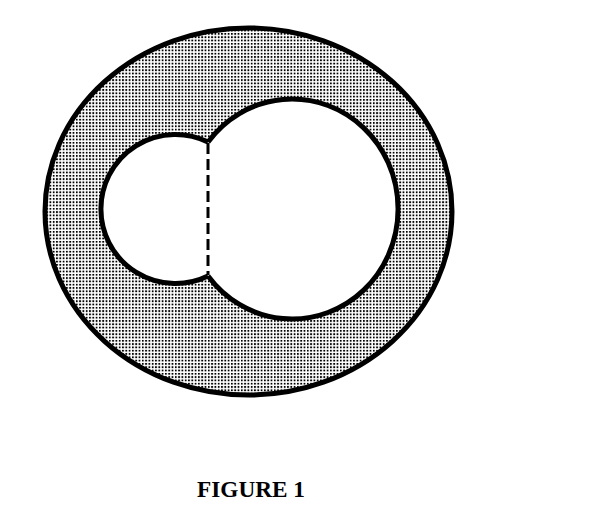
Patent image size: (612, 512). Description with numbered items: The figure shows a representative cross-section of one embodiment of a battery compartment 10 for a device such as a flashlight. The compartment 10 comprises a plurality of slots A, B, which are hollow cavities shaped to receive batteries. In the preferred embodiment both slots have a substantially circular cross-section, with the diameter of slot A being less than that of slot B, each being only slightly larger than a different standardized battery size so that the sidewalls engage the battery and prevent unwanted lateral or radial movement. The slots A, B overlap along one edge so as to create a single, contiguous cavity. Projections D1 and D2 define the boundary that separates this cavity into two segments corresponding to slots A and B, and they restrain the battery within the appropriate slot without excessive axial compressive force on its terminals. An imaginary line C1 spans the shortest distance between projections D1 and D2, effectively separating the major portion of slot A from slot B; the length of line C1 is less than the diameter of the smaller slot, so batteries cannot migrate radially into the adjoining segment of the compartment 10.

The battery compartment 10 is at (312, 362).
The projection D1 is at (214, 134).
The projection D2 is at (202, 292).
The imaginary line C1 is at (208, 228).
The slot A is at (158, 222).
The slot B is at (325, 222).